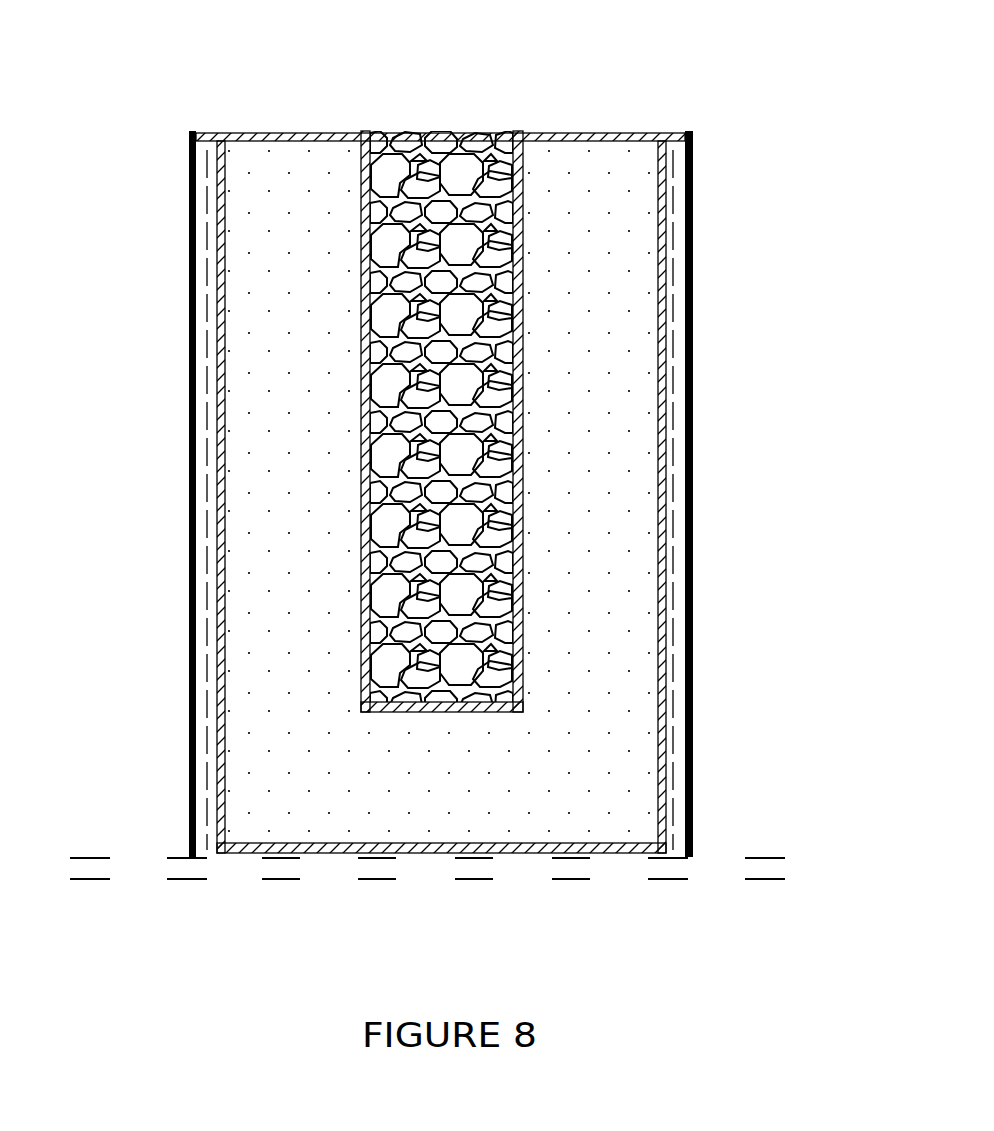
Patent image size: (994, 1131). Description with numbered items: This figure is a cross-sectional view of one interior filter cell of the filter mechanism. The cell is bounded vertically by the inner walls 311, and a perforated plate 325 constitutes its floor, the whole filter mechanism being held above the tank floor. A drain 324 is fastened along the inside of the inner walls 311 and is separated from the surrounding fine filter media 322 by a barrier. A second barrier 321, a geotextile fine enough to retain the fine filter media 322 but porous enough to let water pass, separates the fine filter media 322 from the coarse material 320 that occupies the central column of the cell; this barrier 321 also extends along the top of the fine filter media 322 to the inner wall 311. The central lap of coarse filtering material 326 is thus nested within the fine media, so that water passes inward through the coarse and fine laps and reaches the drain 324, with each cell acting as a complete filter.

The inner walls 311 is at (372, 494).
The coarse material 320 is at (341, 374).
The second barrier 321 is at (762, 696).
The fine filter media 322 is at (361, 469).
The drain 324 is at (354, 500).
The perforated plate 325 is at (427, 910).
The coarse filtering material 326 is at (477, 368).